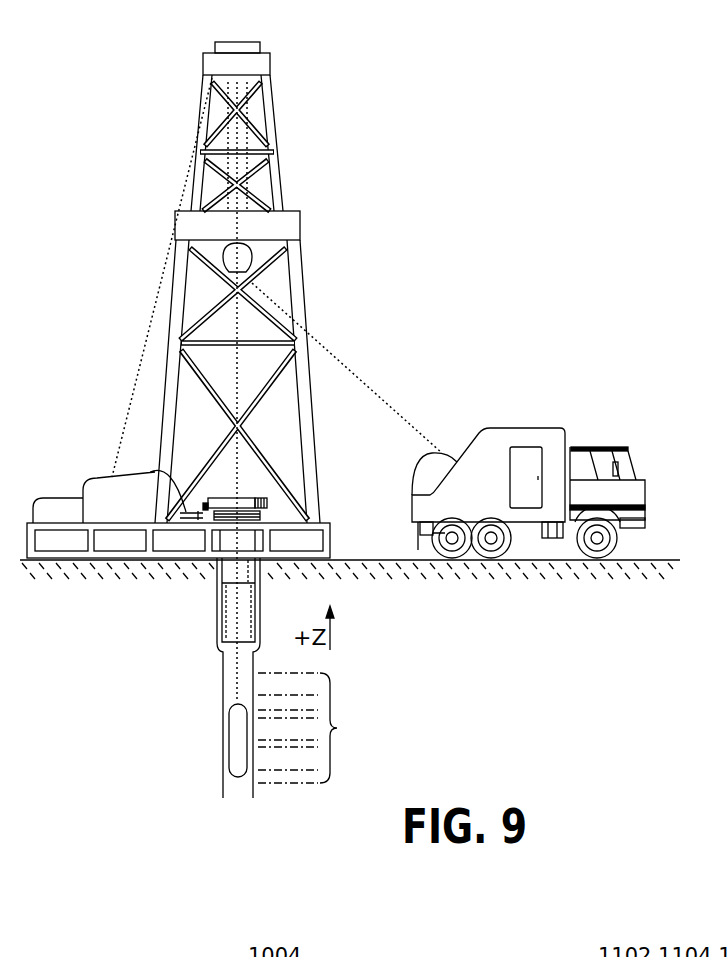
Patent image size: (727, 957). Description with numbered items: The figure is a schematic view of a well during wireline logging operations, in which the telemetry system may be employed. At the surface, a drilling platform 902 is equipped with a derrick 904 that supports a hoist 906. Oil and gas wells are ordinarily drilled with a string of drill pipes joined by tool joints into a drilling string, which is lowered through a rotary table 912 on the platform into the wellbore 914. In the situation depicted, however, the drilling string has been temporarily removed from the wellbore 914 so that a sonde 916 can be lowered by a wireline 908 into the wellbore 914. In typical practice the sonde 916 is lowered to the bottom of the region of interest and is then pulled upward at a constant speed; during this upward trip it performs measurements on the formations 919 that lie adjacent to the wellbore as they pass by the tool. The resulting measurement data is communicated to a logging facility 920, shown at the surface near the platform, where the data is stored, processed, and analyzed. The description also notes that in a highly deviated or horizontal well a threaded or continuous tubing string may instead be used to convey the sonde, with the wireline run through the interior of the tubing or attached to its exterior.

The drilling platform 902 is at (330, 538).
The derrick 904 is at (317, 483).
The hoist 906 is at (252, 257).
The wireline 908 is at (322, 343).
The rotary table 912 is at (257, 493).
The wellbore 914 is at (227, 662).
The sonde 916 is at (232, 728).
The formations 919 is at (320, 728).
The logging facility 920 is at (488, 428).